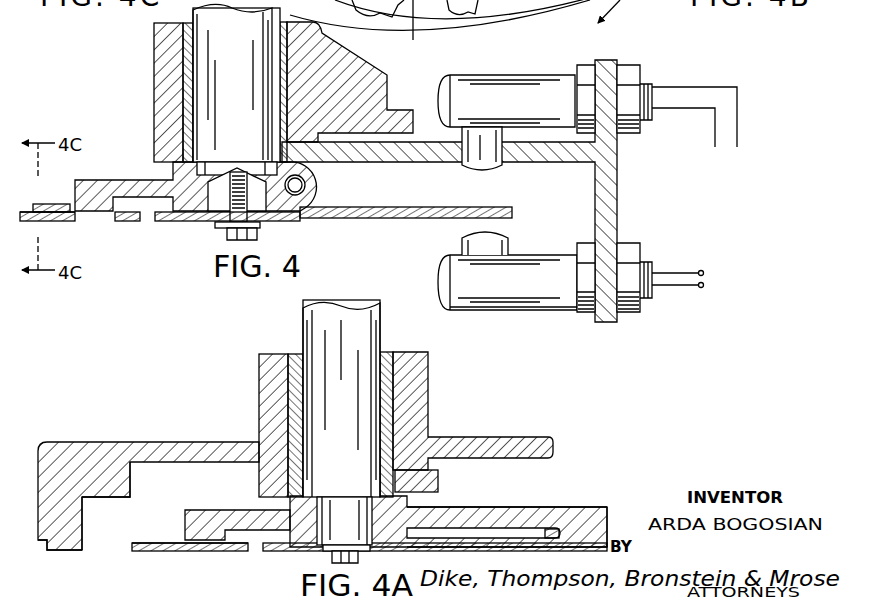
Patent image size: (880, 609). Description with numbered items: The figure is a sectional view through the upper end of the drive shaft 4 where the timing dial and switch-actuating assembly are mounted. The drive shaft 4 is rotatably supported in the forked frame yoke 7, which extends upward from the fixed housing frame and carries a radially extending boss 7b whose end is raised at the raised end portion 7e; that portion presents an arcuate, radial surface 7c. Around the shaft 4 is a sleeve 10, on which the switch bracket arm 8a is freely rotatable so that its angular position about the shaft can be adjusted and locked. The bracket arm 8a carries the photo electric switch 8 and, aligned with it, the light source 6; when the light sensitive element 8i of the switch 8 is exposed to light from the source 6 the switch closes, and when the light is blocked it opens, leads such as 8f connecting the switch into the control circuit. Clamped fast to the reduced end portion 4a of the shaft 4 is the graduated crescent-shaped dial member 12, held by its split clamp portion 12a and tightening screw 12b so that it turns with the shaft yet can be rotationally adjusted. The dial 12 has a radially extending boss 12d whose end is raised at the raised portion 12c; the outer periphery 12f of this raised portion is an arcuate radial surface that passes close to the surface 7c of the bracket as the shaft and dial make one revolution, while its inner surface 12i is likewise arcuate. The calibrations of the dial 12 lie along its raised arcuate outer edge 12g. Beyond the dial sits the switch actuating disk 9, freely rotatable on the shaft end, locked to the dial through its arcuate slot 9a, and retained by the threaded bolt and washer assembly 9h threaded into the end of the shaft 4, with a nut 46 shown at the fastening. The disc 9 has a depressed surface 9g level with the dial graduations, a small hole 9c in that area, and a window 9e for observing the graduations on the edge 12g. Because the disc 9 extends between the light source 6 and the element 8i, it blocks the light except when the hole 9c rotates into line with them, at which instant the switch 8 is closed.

In FIG. 4, the drive shaft 4 is at (213, 0).
In FIG. 4A, the drive shaft 4 is at (347, 318).
In FIG. 4, the reduced end portion 4a is at (262, 205).
In FIG. 4A, the reduced end portion 4a is at (352, 506).
In FIG. 4, the light source 6 is at (497, 238).
In FIG. 4, the forked frame yoke 7 is at (352, 66).
In FIG. 4A, the forked frame yoke 7 is at (418, 393).
In FIG. 4A, the boss 7b is at (112, 498).
In FIG. 4A, the arcuate radial surface 7c is at (89, 522).
In FIG. 4A, the raised end portion 7e is at (72, 541).
In FIG. 4, the photo electric switch 8 is at (538, 68).
In FIG. 4, the switch bracket arm 8a is at (425, 142).
In FIG. 4A, the switch bracket arm 8a is at (440, 486).
In FIG. 4, the switch leads 8f is at (704, 87).
In FIG. 4, the light sensitive element 8i is at (490, 168).
In FIG. 4, the switch actuating disk 9 is at (60, 224).
In FIG. 4A, the switch actuating disk 9 is at (192, 555).
In FIG. 4, the arcuate slot 9a is at (148, 218).
In FIG. 4A, the arcuate slot 9a is at (258, 548).
In FIG. 4, the small hole 9c is at (39, 207).
In FIG. 4, the window 9e is at (103, 215).
In FIG. 4, the depressed surface 9g is at (64, 207).
In FIG. 4, the threaded bolt and washer assembly 9h is at (256, 235).
In FIG. 4A, the threaded bolt and washer assembly 9h is at (368, 556).
In FIG. 4, the sleeve 10 is at (288, 48).
In FIG. 4A, the sleeve 10 is at (388, 355).
In FIG. 4A, the dial member 12 is at (607, 528).
In FIG. 4, the split clamp portion 12a is at (304, 217).
In FIG. 4, the tightening screw 12b is at (306, 185).
In FIG. 4A, the raised portion 12c is at (606, 546).
In FIG. 4A, the radially extending boss 12d is at (524, 510).
In FIG. 4A, the outer periphery 12f is at (610, 540).
In FIG. 4, the raised arcuate outer edge 12g is at (102, 205).
In FIG. 4A, the raised arcuate outer edge 12g is at (210, 515).
In FIG. 4A, the inner surface 12i is at (547, 550).
In FIG. 4, the nut 46 is at (222, 229).
In FIG. 4A, the nut 46 is at (322, 554).